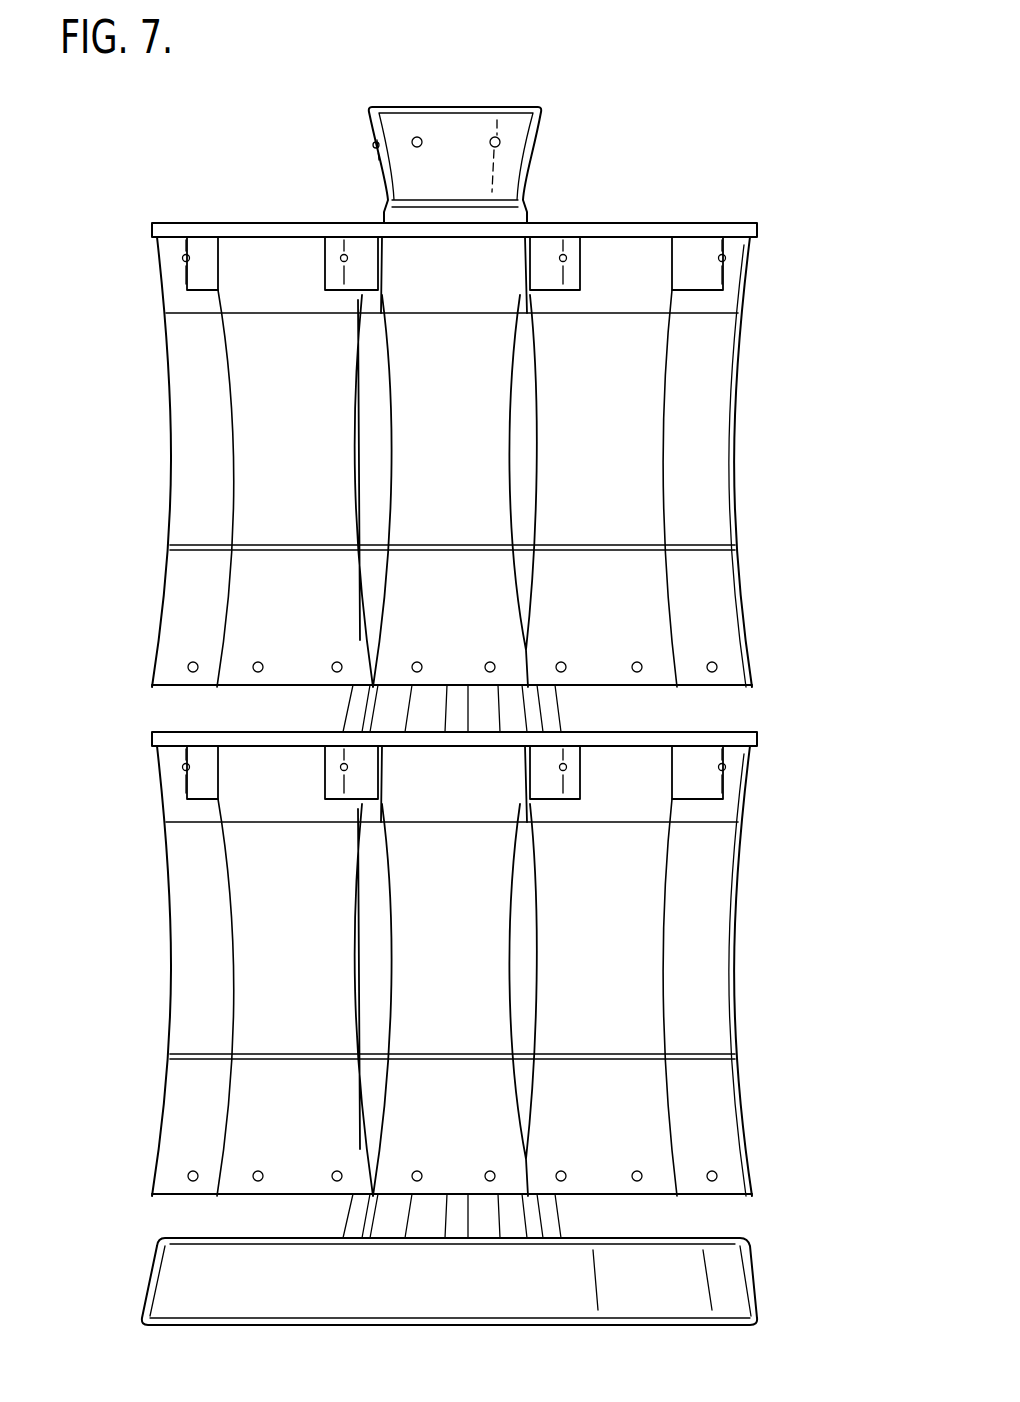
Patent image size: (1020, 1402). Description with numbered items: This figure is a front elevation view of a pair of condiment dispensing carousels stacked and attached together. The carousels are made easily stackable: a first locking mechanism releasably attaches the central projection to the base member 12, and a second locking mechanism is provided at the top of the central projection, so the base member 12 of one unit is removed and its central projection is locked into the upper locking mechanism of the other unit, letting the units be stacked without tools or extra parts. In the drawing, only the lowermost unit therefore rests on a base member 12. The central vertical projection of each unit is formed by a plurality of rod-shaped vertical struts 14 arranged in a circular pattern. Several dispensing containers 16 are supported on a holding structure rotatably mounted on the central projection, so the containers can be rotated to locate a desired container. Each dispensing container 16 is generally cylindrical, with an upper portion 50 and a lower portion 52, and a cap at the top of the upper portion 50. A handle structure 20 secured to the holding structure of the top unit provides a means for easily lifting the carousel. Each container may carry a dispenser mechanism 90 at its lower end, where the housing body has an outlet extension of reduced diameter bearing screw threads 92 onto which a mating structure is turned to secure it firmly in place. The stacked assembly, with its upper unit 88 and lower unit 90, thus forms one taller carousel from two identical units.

The base member 12 is at (738, 1287).
The rod-shaped vertical struts 14 is at (640, 714).
The dispensing containers 16 is at (717, 415).
The handle structure 20 is at (485, 106).
The upper portion 50 is at (163, 277).
The lower portion 52 is at (745, 607).
The upper module unit 88 is at (786, 225).
The dispenser mechanism 90 is at (786, 771).
The screw threads 92 is at (344, 240).